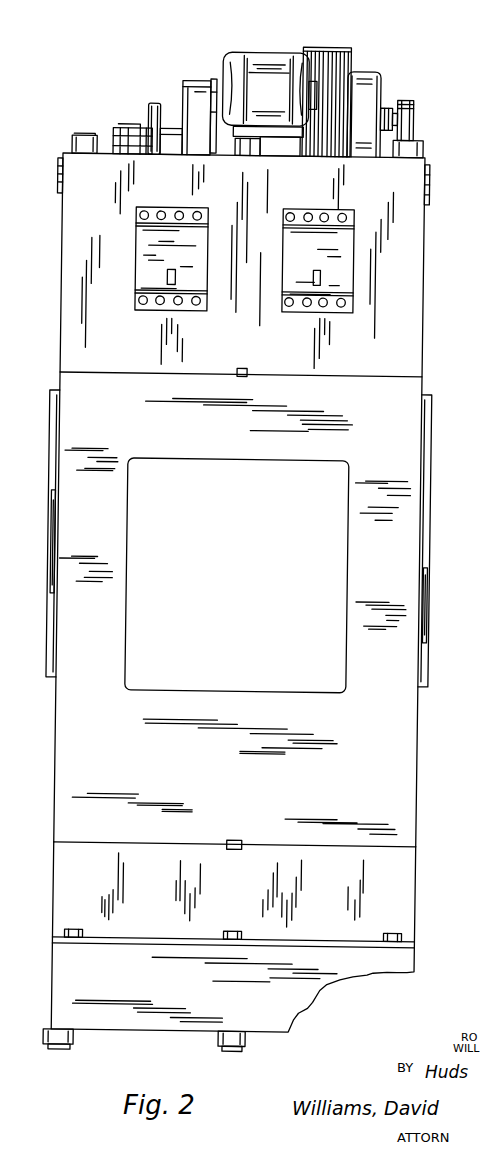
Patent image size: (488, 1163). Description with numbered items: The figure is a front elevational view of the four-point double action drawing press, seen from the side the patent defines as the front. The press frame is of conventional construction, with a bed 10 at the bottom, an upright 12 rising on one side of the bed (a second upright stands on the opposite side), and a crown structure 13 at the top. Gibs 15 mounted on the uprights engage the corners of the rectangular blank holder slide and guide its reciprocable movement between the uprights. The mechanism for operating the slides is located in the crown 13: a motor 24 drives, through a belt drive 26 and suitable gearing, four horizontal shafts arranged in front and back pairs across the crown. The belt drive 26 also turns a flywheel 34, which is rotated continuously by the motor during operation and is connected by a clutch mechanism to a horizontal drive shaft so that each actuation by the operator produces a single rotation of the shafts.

The bed 10 is at (405, 886).
The upright 12 is at (410, 532).
The crown structure 13 is at (89, 248).
The gibs 15 is at (56, 514).
The motor 24 is at (244, 36).
The belt drive 26 is at (323, 45).
The flywheel 34 is at (350, 65).